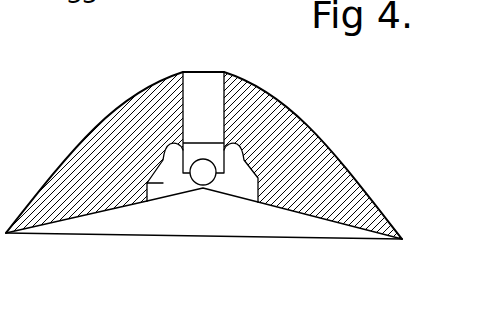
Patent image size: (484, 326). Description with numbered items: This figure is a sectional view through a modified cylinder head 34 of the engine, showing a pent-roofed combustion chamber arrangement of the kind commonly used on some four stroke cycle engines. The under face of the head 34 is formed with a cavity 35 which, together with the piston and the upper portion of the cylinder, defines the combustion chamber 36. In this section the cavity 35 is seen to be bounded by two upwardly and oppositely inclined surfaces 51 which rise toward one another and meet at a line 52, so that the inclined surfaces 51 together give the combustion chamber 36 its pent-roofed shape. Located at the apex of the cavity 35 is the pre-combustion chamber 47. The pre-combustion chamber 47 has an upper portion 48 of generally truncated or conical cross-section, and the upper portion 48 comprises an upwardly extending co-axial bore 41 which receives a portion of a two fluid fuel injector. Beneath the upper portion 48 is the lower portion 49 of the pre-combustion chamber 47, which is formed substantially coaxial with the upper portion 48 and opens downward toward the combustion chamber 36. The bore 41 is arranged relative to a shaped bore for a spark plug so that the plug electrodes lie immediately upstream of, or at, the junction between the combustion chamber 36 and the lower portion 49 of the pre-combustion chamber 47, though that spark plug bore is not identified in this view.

The head 34 is at (362, 183).
The cavity 35 is at (342, 233).
The combustion chamber 36 is at (187, 280).
The co-axial bore 41 is at (210, 90).
The pre-combustion chamber 47 is at (237, 165).
The upper portion 48 is at (165, 162).
The lower portion 49 is at (163, 183).
The inclined surfaces 51 is at (60, 225).
The line 52 is at (207, 192).